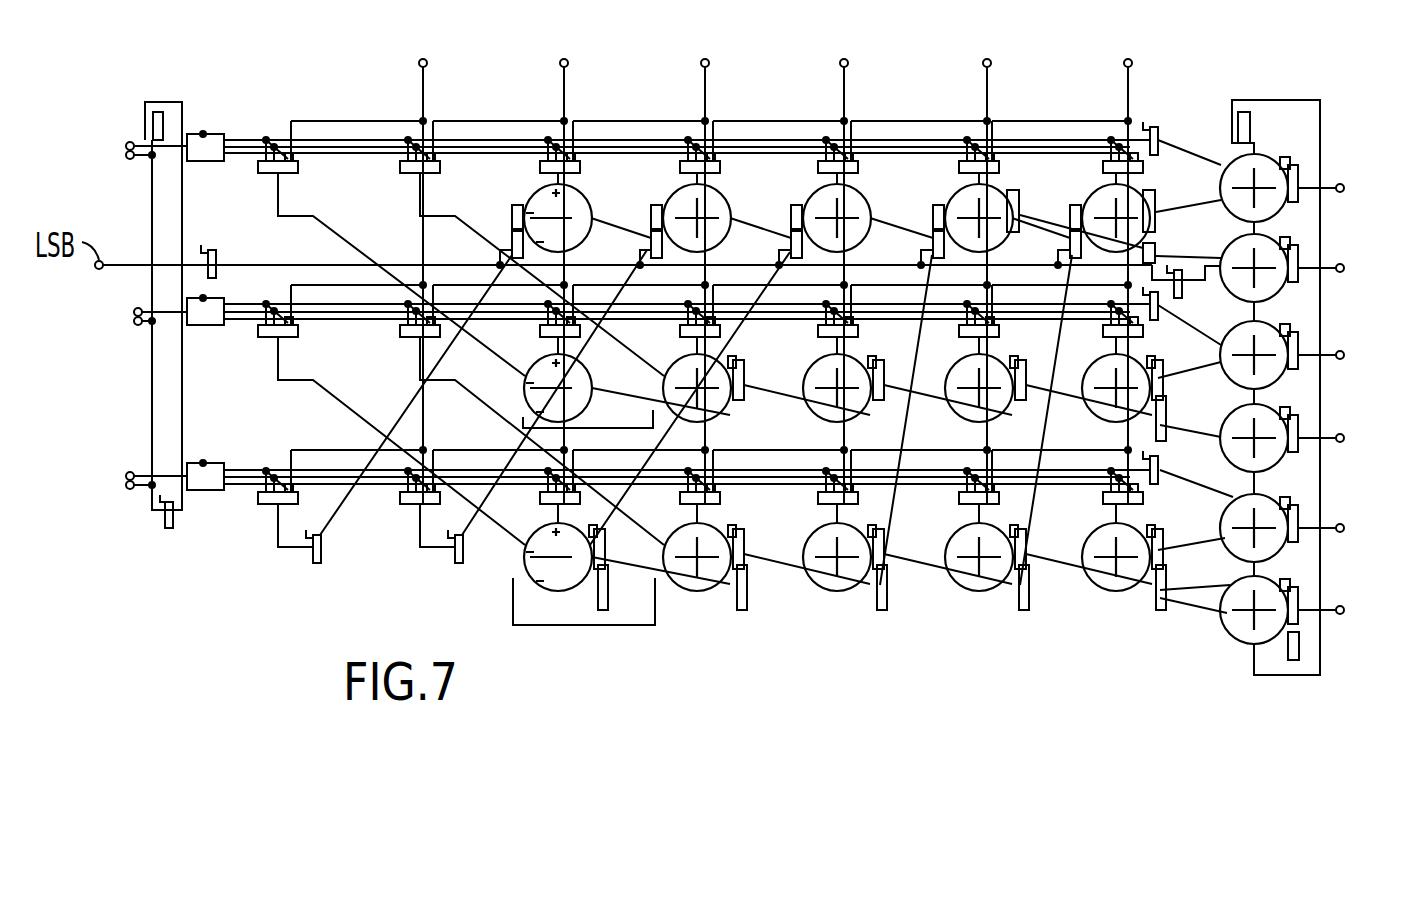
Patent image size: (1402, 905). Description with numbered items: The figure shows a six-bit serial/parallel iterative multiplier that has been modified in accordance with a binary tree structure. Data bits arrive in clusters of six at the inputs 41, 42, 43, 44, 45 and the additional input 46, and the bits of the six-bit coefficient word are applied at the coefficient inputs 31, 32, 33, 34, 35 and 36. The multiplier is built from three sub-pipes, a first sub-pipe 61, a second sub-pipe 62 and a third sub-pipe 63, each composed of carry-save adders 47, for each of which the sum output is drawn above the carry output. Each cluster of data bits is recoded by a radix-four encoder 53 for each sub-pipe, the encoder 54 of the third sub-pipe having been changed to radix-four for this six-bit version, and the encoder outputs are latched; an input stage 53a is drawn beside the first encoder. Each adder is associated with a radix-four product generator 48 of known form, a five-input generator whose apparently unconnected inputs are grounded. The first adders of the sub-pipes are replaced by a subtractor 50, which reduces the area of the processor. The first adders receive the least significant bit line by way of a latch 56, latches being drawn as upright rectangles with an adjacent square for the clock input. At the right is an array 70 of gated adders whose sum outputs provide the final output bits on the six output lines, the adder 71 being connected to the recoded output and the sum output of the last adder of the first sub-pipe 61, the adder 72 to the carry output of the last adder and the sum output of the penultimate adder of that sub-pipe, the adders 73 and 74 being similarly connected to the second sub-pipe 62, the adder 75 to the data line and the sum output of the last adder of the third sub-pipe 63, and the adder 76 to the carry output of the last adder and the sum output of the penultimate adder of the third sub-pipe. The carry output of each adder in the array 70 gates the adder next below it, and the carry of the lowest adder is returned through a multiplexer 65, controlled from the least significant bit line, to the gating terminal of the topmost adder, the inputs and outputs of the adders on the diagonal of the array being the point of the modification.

The coefficient input 31 is at (427, 59).
The coefficient input 32 is at (568, 59).
The coefficient input 33 is at (709, 59).
The coefficient input 34 is at (848, 59).
The coefficient input 35 is at (991, 59).
The coefficient input 36 is at (1132, 59).
The data input 41 is at (130, 142).
The data input 42 is at (130, 159).
The data input 43 is at (138, 308).
The data input 44 is at (138, 325).
The data input 45 is at (130, 472).
The additional input 46 is at (130, 489).
The carry-save adder 47 is at (731, 203).
The radix-4 product generator 48 is at (298, 170).
The subtractor 50 is at (592, 203).
The radix-4 encoder 53 is at (220, 134).
The input register 53a is at (160, 102).
The radix-2 encoder 54 is at (212, 490).
The latch 56 is at (216, 255).
The first sub-pipe 61 is at (240, 211).
The second sub-pipe 62 is at (240, 421).
The third sub-pipe 63 is at (237, 586).
The multiplexer 65 is at (1258, 96).
The array of gated adders 70 is at (1224, 648).
The adder 71 is at (1344, 191).
The adder 72 is at (1344, 271).
The adder 73 is at (1344, 358).
The adder 74 is at (1344, 441).
The adder 75 is at (1344, 531).
The adder 76 is at (1344, 613).